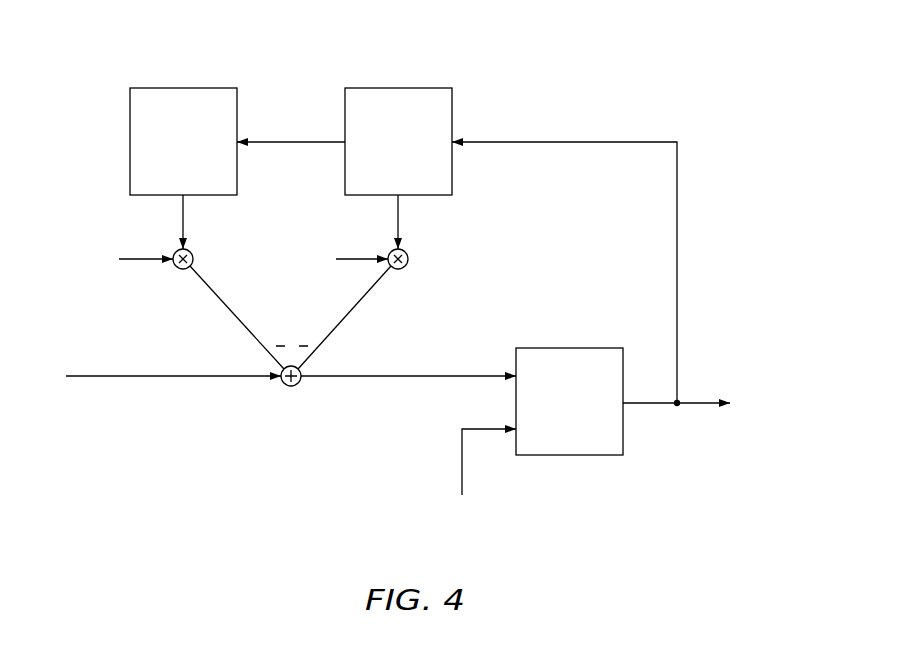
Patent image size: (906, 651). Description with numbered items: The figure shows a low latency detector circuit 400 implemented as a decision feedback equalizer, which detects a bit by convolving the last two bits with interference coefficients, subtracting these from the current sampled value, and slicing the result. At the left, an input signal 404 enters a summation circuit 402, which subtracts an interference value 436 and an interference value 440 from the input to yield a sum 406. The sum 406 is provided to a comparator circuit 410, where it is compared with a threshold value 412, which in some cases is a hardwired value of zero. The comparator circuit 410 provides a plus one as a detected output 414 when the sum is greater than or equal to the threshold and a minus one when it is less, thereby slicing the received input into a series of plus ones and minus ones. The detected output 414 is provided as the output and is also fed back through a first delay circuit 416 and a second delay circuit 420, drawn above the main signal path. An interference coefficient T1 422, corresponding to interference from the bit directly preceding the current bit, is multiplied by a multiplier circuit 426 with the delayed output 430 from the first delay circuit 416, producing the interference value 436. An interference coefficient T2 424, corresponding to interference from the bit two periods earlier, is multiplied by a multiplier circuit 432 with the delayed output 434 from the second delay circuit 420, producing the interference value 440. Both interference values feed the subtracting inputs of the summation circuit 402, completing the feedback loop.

The low latency detector circuit 400 is at (117, 52).
The summation circuit 402 is at (292, 387).
The input signal 404 is at (36, 365).
The sum 406 is at (407, 378).
The comparator circuit 410 is at (553, 443).
The threshold value 412 is at (396, 512).
The detected output 414 is at (780, 380).
The first delay circuit 416 is at (382, 183).
The second delay circuit 420 is at (167, 183).
The interference coefficient T1 422 is at (292, 262).
The interference coefficient T2 424 is at (76, 262).
The multiplier circuit 426 is at (407, 260).
The delayed output 430 is at (397, 209).
The multiplier circuit 432 is at (190, 252).
The delayed output 434 is at (182, 209).
The interference value 436 is at (353, 312).
The interference value 440 is at (232, 313).